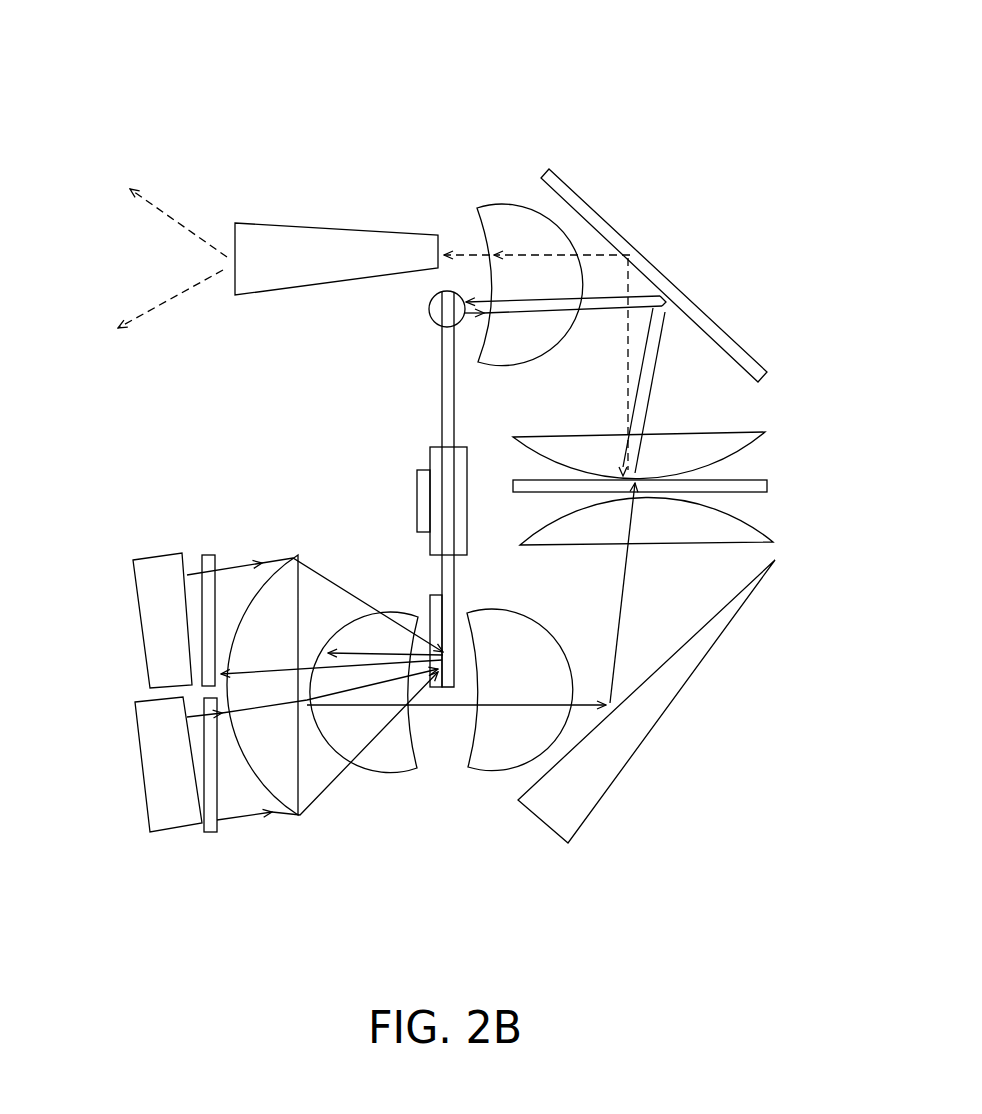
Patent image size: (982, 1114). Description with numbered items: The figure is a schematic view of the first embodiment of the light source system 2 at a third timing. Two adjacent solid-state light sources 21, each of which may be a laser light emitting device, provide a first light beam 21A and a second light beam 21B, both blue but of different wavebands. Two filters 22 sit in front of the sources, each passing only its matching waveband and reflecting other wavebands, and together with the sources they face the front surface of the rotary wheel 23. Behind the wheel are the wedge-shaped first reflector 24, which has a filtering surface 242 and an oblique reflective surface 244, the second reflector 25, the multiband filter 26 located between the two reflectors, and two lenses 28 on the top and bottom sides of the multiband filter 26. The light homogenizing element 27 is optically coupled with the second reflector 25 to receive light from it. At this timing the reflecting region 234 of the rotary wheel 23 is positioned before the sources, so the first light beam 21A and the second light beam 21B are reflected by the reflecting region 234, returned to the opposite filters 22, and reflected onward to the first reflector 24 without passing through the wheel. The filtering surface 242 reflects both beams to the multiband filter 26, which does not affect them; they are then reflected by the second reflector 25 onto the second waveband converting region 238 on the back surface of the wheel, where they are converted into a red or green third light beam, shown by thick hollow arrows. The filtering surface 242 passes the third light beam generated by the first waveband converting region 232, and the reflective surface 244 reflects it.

The light source system 2 is at (254, 46).
The solid-state light sources 21 is at (140, 623).
The first light beam 21A is at (315, 616).
The second light beam 21B is at (396, 744).
The filters 22 is at (208, 553).
The rotary wheel 23 is at (441, 398).
The first waveband converting region 232 is at (429, 307).
The reflecting region 234 is at (435, 690).
The second waveband converting region 238 is at (463, 302).
The first reflector 24 is at (606, 760).
The filtering surface 242 is at (724, 587).
The reflective surface 244 is at (731, 636).
The second reflector 25 is at (609, 225).
The multiband filter 26 is at (734, 483).
The light homogenizing element 27 is at (335, 227).
The lenses 28 is at (706, 452).